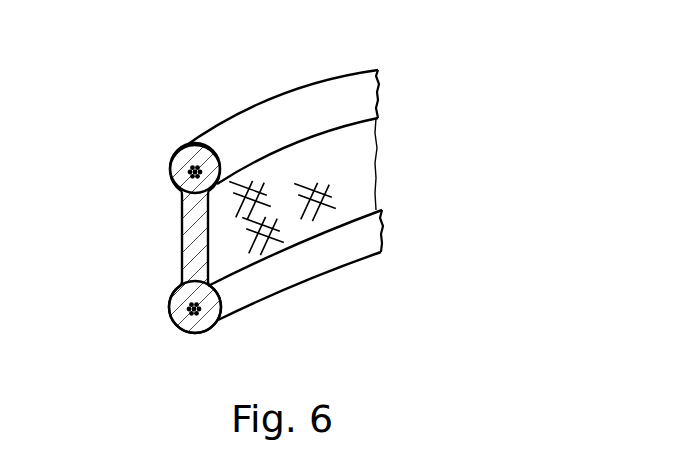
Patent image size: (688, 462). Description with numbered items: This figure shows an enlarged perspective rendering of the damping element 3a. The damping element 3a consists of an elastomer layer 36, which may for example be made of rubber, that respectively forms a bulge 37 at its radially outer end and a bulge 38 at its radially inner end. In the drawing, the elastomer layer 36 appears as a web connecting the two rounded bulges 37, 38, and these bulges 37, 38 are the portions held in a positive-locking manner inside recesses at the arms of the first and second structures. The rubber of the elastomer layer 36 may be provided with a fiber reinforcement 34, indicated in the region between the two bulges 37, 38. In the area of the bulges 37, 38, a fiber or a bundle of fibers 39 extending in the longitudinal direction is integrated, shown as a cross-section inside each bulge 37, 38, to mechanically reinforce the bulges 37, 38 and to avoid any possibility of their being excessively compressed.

The damping element 3a is at (119, 218).
The fiber reinforcement 34 is at (286, 178).
The elastomer layer 36 is at (182, 238).
The bulge 37 is at (177, 161).
The bulge 38 is at (171, 308).
The bundle of fibers 39 is at (191, 313).